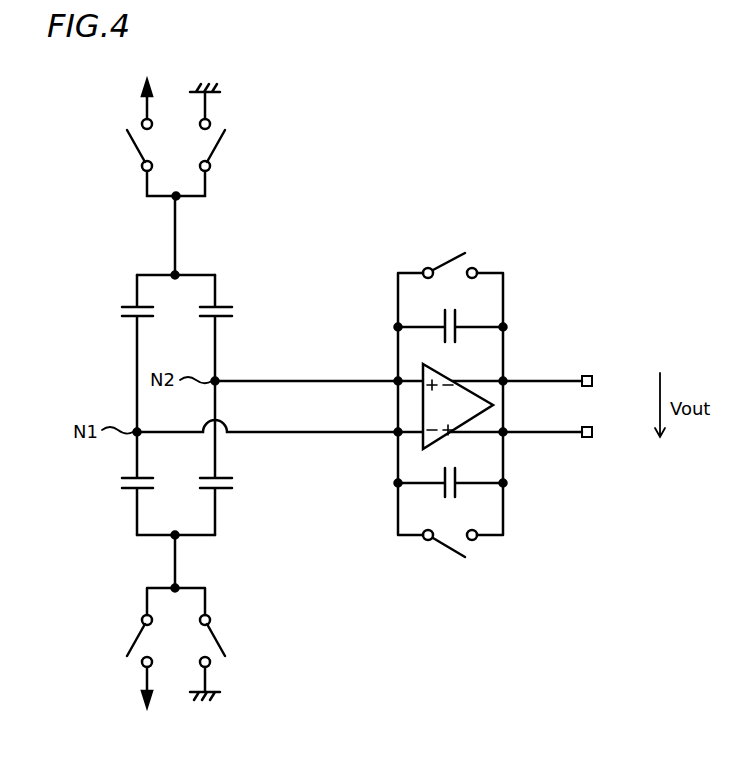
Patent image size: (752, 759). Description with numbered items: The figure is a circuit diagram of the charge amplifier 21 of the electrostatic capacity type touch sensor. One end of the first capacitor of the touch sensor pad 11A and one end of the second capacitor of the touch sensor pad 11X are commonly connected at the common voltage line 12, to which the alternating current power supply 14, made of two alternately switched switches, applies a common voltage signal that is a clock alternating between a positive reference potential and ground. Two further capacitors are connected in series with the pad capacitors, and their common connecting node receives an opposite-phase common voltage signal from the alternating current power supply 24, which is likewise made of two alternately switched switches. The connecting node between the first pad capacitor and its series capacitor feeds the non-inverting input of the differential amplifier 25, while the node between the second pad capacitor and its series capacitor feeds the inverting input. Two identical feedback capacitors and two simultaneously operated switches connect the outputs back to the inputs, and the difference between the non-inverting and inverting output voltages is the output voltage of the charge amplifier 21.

The alternating current power supply 14 is at (100, 112).
The common voltage line 12 is at (170, 271).
The touch sensor pad 11X is at (112, 278).
The touch sensor pad 11A is at (233, 278).
The alternating current power supply 24 is at (100, 598).
The charge amplifier 21 is at (489, 460).
The differential amplifier 25 is at (500, 405).